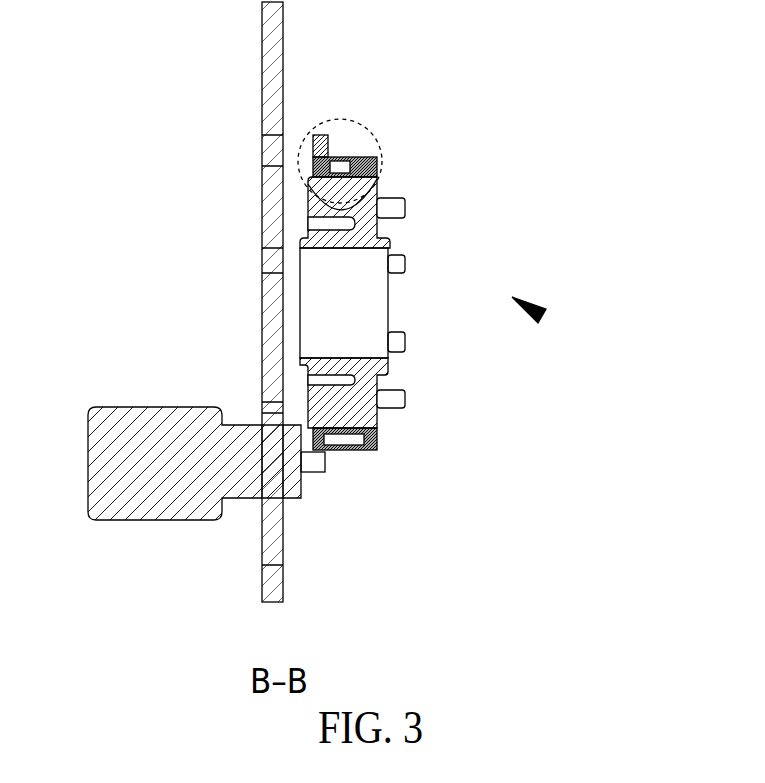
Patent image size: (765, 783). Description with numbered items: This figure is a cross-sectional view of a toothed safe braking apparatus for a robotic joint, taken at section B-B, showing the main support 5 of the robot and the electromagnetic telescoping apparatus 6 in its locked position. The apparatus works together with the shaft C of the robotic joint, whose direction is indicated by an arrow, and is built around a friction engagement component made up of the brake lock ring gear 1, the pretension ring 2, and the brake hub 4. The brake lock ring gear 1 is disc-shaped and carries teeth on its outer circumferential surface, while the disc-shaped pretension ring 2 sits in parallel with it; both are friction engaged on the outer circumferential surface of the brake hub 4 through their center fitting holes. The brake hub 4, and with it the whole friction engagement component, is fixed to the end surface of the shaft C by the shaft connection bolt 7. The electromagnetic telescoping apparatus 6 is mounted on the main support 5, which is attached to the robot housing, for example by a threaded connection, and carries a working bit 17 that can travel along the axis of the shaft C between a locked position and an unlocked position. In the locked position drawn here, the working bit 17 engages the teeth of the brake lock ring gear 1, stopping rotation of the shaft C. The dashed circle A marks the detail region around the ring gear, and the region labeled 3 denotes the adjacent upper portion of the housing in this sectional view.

The brake lock ring gear 1 is at (337, 129).
The pretension ring 2 is at (376, 156).
The upper housing portion 3 is at (380, 160).
The brake hub 4 is at (392, 233).
The main support 5 is at (272, 386).
The electromagnetic telescoping apparatus 6 is at (293, 489).
The shaft connection bolt 7 is at (398, 399).
The working bit 17 is at (318, 466).
The detail region A is at (383, 157).
The shaft C is at (543, 313).